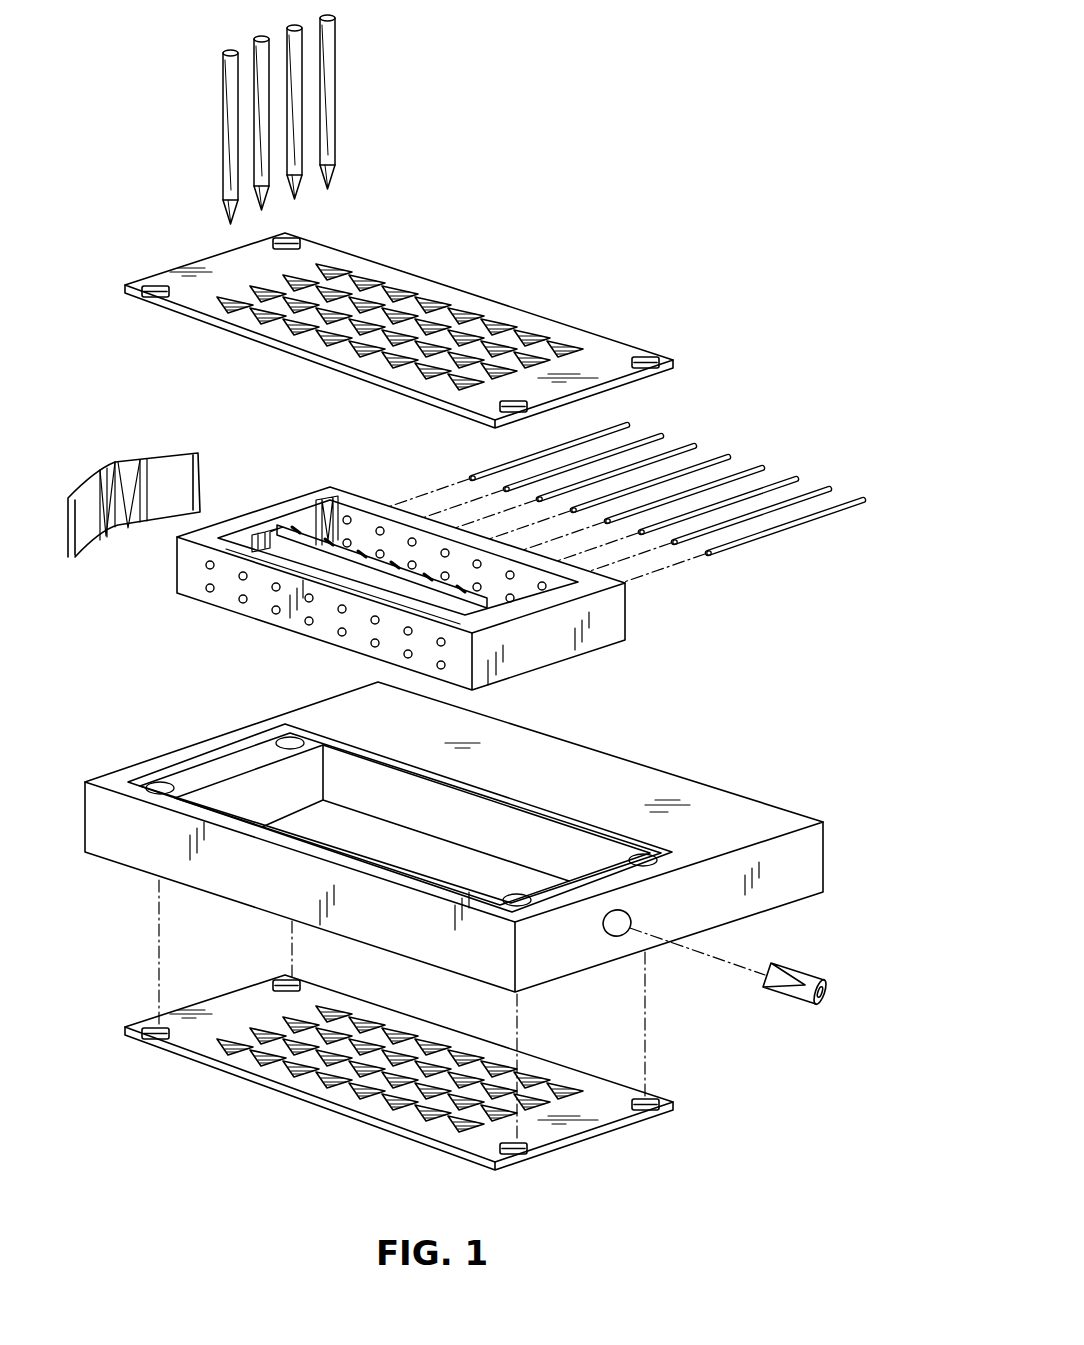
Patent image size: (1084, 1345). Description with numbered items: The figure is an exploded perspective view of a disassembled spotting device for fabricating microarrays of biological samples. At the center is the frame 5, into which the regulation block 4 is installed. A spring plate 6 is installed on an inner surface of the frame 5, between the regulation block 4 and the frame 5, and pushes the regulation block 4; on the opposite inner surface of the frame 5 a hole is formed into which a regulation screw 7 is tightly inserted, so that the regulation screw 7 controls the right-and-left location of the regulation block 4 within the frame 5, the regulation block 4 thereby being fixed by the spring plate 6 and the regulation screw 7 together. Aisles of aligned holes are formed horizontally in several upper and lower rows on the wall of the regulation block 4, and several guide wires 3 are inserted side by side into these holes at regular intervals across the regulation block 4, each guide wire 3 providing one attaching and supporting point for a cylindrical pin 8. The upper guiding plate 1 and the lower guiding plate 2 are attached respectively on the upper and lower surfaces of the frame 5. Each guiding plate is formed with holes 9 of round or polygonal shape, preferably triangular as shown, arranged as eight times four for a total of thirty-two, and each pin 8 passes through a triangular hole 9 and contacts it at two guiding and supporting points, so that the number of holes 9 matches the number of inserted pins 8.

The upper guiding plate 1 is at (601, 352).
The lower guiding plate 2 is at (585, 1130).
The guide wire 3 is at (742, 470).
The regulation block 4 is at (523, 638).
The frame 5 is at (810, 866).
The spring plate 6 is at (153, 470).
The regulation screw 7 is at (818, 1004).
The pin 8 is at (337, 97).
The holes 9 is at (463, 310).